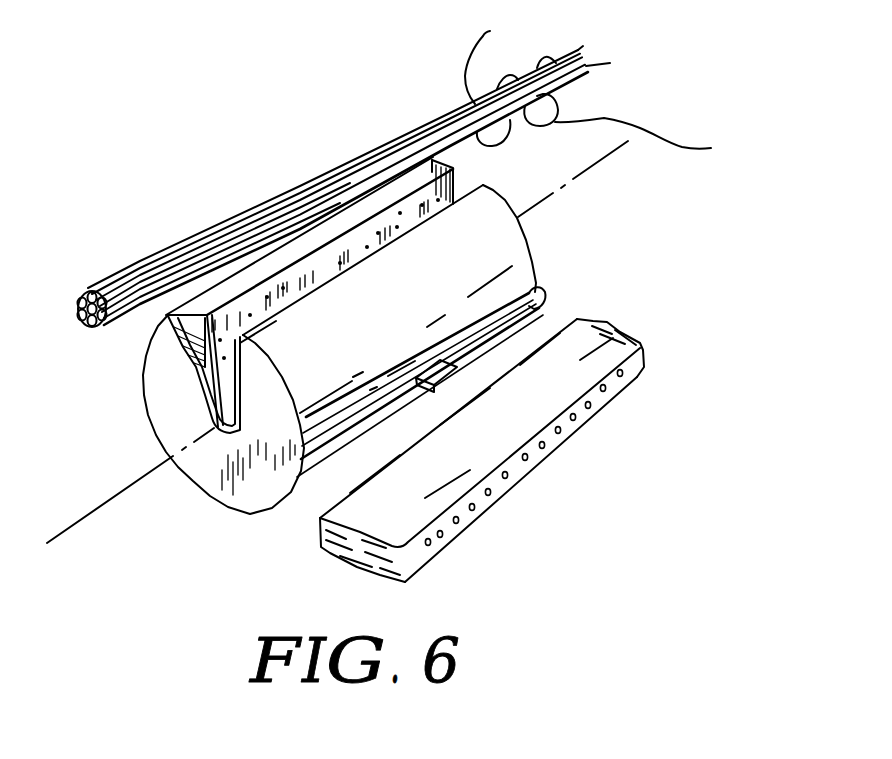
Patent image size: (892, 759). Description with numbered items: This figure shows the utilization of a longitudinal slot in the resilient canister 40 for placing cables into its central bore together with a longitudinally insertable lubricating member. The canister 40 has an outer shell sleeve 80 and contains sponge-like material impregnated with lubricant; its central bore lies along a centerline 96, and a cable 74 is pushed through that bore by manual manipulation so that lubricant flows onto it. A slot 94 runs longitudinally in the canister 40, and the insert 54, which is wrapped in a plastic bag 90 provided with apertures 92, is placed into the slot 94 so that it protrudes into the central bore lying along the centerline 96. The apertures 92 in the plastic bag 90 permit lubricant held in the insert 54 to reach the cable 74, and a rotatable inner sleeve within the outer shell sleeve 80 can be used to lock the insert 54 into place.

The resilient canister 40 is at (392, 370).
The insert 54 is at (506, 421).
The cable 74 is at (347, 163).
The outer shell sleeve 80 is at (243, 493).
The plastic bag 90 is at (506, 441).
The apertures 92 is at (490, 496).
The slot 94 is at (473, 177).
The centerline 96 is at (138, 478).